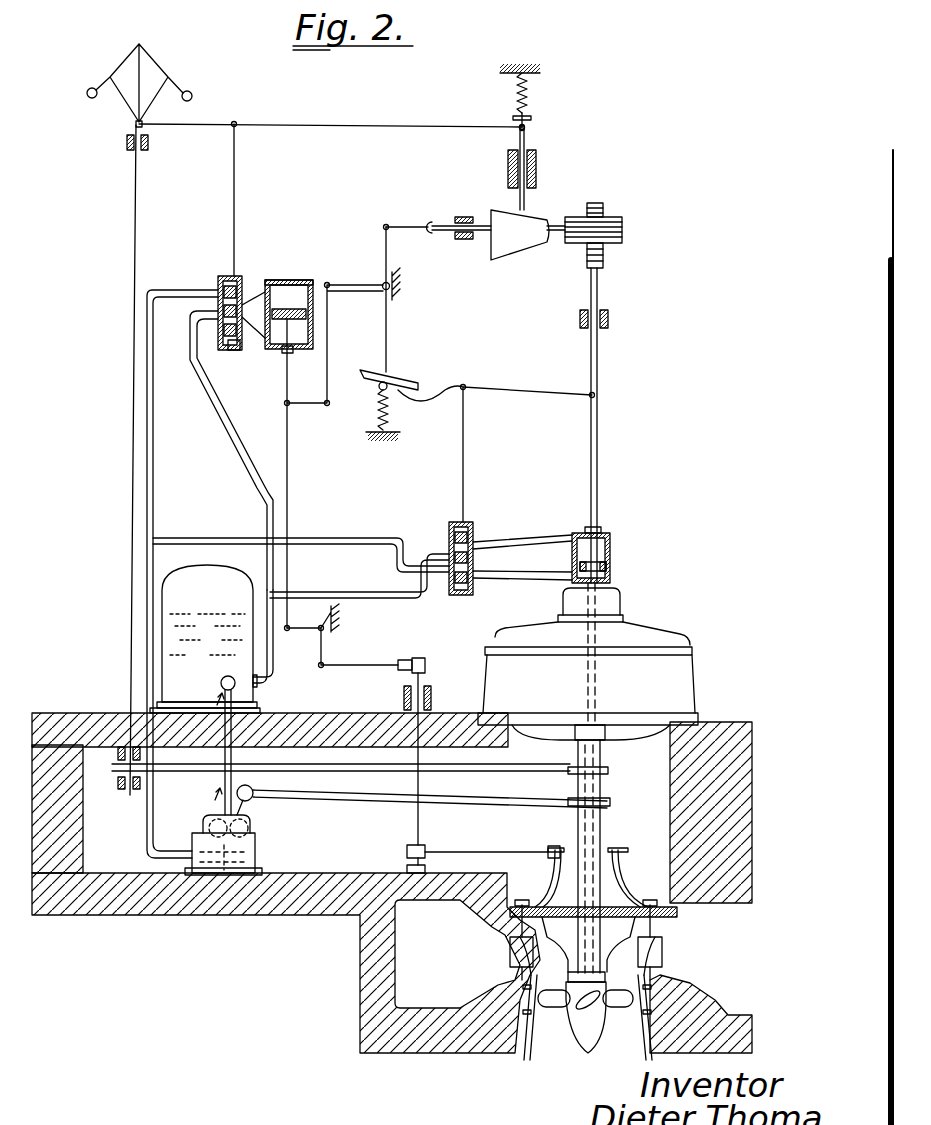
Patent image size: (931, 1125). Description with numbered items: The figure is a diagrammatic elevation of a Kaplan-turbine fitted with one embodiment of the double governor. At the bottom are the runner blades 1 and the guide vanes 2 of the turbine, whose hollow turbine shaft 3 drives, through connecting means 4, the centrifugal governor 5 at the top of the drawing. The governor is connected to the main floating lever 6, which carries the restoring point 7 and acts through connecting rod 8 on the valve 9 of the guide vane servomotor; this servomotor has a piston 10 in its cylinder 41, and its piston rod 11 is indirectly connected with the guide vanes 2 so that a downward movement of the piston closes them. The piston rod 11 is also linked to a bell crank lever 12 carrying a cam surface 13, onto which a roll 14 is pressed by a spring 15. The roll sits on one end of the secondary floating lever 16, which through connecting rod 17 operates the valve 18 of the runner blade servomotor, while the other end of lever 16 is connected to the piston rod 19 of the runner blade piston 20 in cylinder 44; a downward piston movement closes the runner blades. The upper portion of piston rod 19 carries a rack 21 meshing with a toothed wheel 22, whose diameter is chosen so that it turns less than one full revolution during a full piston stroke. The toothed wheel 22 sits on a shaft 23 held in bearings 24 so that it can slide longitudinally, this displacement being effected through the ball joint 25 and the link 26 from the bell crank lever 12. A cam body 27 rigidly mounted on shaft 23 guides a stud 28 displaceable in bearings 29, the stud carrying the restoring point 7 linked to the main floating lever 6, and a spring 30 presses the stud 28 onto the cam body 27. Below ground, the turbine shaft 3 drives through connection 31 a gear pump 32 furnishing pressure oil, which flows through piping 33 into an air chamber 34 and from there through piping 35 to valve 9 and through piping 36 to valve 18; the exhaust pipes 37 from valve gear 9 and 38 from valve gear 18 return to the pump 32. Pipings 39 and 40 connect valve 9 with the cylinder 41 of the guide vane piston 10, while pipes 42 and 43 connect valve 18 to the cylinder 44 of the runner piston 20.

The runner blades 1 is at (580, 1005).
The guide vanes 2 is at (660, 960).
The hollow turbine shaft 3 is at (600, 843).
The connecting means 4 is at (358, 770).
The centrifugal governor 5 is at (130, 110).
The main floating lever 6 is at (345, 125).
The restoring point 7 is at (526, 128).
The connecting rod 8 is at (235, 207).
The valve 9 is at (242, 282).
The piston 10 is at (313, 287).
The piston rod 11 is at (287, 440).
The bell crank lever 12 is at (387, 340).
The cam surface 13 is at (379, 386).
The roll 14 is at (380, 395).
The spring 15 is at (395, 435).
The secondary floating lever 16 is at (515, 388).
The connecting rod 17 is at (463, 458).
The valve 18 is at (473, 536).
The piston rod 19 is at (598, 445).
The runner blade piston 20 is at (606, 565).
The rack 21 is at (604, 265).
The toothed wheel 22 is at (615, 220).
The shaft 23 is at (558, 226).
The bearings 24 is at (464, 216).
The ball joint 25 is at (429, 222).
The link 26 is at (400, 222).
The cam body 27 is at (525, 255).
The stud 28 is at (526, 205).
The bearings 29 is at (536, 168).
The spring 30 is at (528, 92).
The connection 31 is at (490, 800).
The gear pump 32 is at (250, 830).
The piping 33 is at (225, 778).
The air chamber 34 is at (218, 592).
The piping 35 is at (240, 448).
The piping 36 is at (385, 597).
The exhaust pipe 37 is at (153, 448).
The exhaust pipe 38 is at (396, 540).
The piping 39 is at (278, 306).
The piping 40 is at (240, 352).
The cylinder 41 is at (299, 281).
The pipe 42 is at (525, 538).
The pipe 43 is at (520, 578).
The cylinder 44 is at (608, 535).